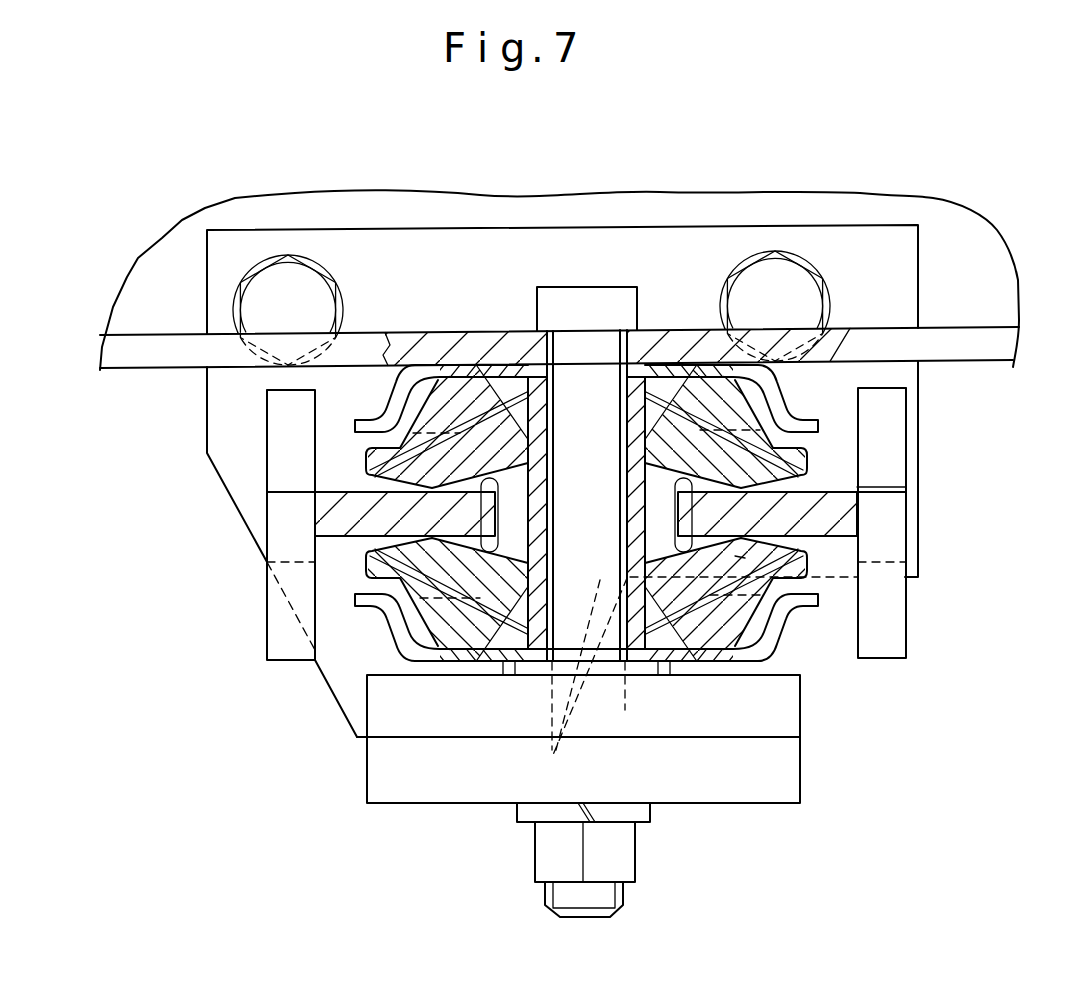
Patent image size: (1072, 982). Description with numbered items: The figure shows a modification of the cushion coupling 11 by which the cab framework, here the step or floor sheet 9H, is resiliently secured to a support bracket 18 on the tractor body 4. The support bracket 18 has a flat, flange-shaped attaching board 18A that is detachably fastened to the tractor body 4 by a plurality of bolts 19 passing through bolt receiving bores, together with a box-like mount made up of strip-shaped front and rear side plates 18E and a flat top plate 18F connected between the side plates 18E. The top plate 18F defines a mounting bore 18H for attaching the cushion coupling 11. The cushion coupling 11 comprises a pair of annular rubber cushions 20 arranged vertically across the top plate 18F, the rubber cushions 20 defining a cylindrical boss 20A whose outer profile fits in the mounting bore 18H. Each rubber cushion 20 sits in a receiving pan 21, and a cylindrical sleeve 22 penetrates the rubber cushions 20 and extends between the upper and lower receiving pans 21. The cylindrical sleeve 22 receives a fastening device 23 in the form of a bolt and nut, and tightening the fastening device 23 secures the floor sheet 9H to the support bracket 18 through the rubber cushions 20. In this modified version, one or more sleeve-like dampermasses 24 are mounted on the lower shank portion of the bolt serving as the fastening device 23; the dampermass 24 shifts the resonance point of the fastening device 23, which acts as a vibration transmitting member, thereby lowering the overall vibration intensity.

The tractor body 4 is at (995, 272).
The step or floor sheet 9H is at (142, 355).
The cushion coupling 11 is at (385, 630).
The support bracket 18 is at (253, 604).
The attaching board 18A is at (568, 248).
The side plates 18E is at (885, 632).
The top plate 18F is at (848, 500).
The mounting bore 18H is at (735, 557).
The bolt 19 is at (282, 285).
The rubber cushions 20 is at (455, 390).
The cylindrical boss 20A is at (483, 528).
The receiving pan 21 is at (413, 372).
The cylindrical sleeve 22 is at (537, 622).
The fastening device 23 is at (548, 848).
The dampermass 24 is at (783, 758).